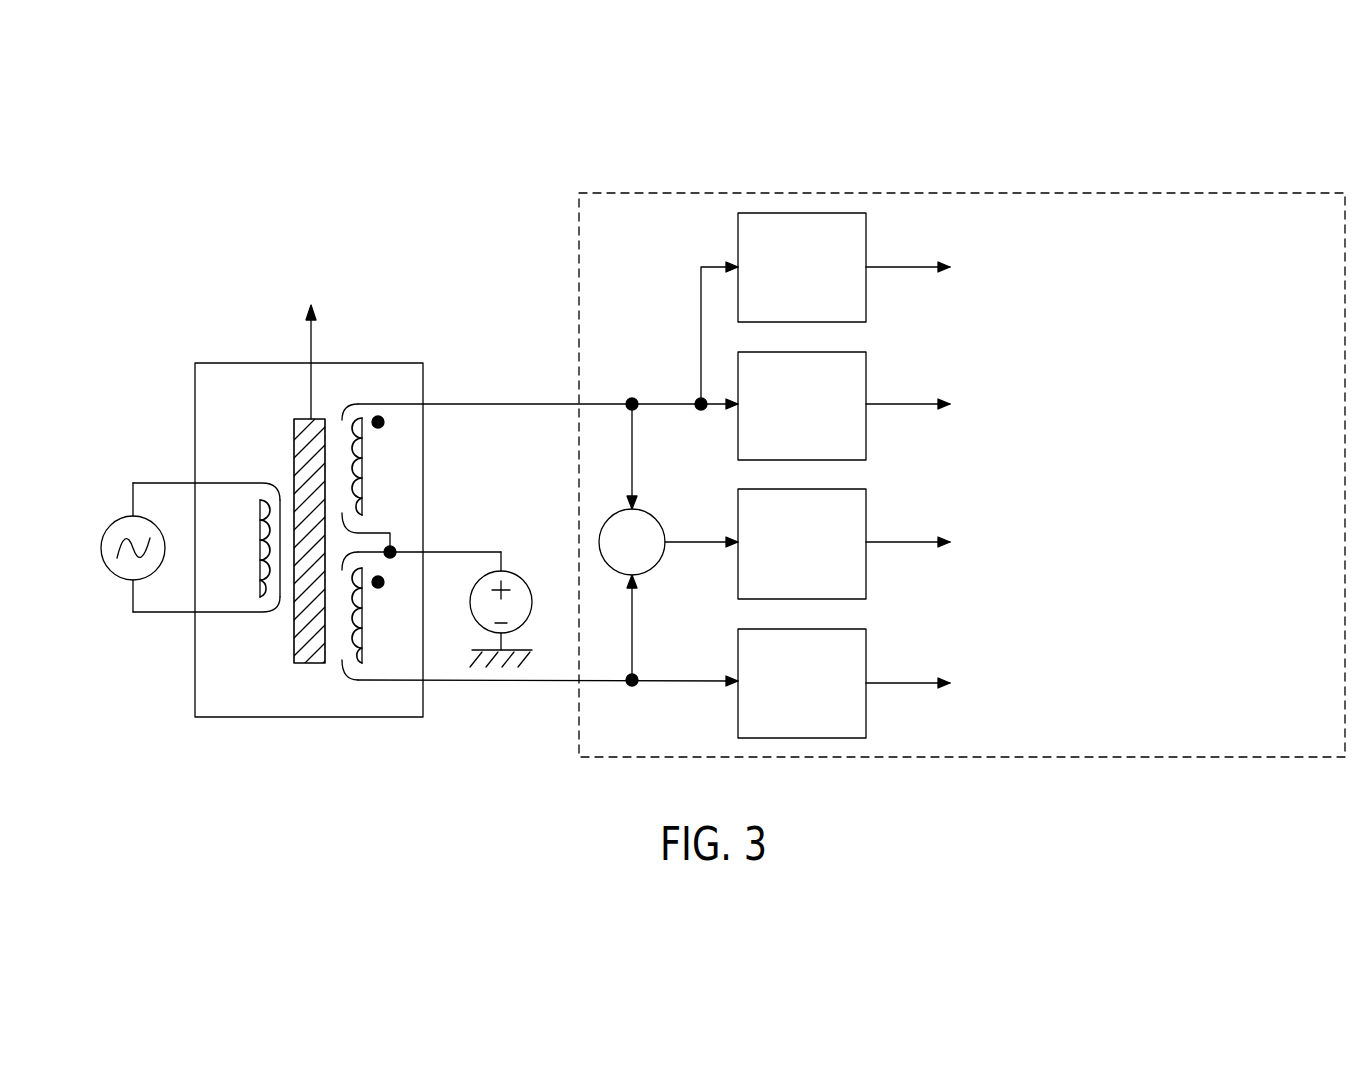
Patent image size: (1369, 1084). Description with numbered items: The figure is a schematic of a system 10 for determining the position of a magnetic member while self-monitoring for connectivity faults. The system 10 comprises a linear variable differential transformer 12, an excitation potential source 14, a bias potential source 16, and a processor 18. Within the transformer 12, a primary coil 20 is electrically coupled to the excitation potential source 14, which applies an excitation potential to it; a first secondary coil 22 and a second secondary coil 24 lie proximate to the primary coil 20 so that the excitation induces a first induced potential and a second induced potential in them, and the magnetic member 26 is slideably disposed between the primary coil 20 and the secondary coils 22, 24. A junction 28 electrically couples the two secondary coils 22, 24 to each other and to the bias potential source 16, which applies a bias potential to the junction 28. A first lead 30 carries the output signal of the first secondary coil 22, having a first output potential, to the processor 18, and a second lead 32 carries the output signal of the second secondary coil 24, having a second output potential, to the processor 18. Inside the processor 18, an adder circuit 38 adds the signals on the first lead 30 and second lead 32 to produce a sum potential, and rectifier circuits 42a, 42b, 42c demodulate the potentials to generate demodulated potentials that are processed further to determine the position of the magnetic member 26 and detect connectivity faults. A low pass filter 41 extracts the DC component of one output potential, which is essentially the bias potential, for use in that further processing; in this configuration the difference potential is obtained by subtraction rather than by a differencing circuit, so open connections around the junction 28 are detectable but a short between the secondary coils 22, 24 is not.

The system 10 is at (100, 291).
The linear variable differential transformer 12 is at (222, 363).
The excitation potential source 14 is at (117, 577).
The bias potential source 16 is at (515, 576).
The processor 18 is at (930, 757).
The primary coil 20 is at (258, 523).
The first secondary coil 22 is at (362, 465).
The second secondary coil 24 is at (343, 650).
The magnetic member 26 is at (294, 612).
The junction 28 is at (394, 549).
The first lead 30 is at (447, 403).
The second lead 32 is at (428, 683).
The adder circuit 38 is at (650, 515).
The low pass filter 41 is at (868, 238).
The rectifier circuit 42a is at (868, 372).
The rectifier circuit 42b is at (868, 508).
The rectifier circuit 42c is at (868, 655).